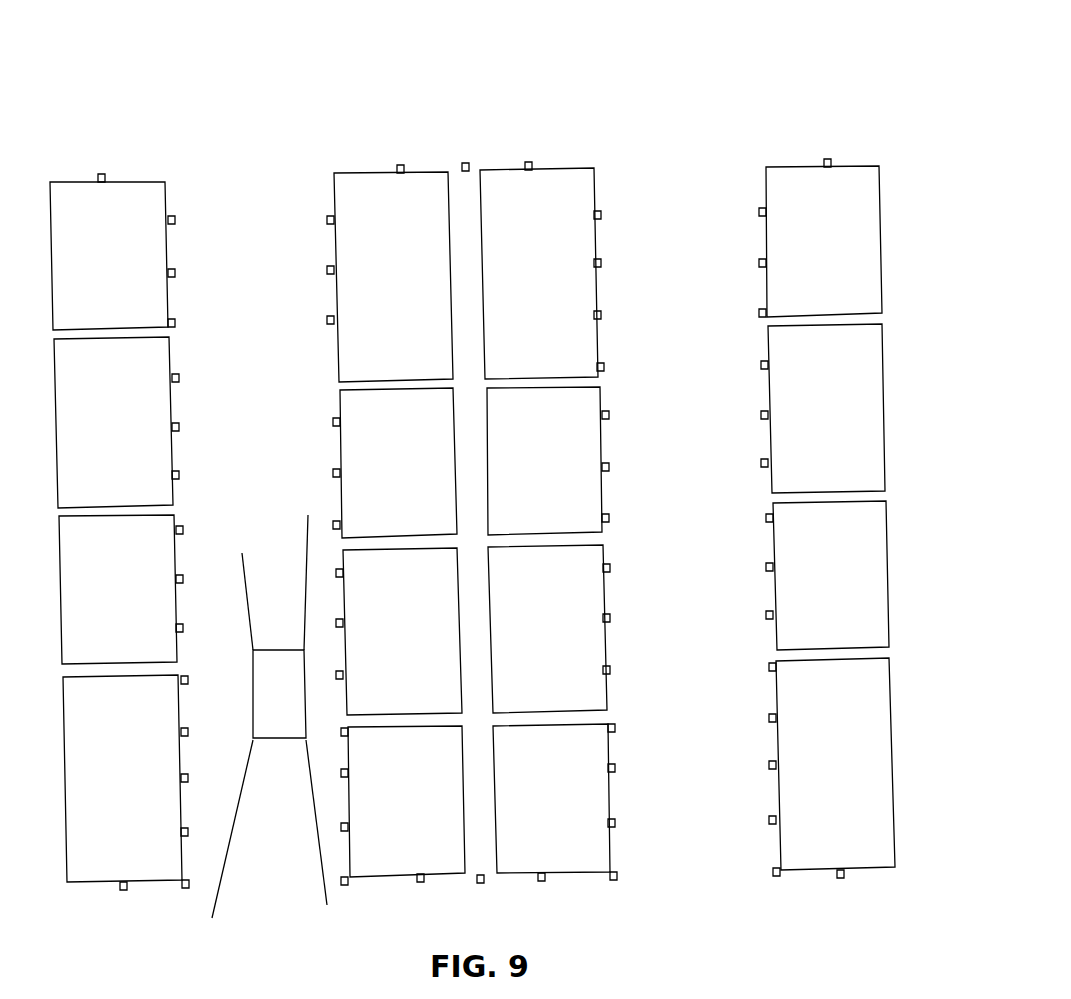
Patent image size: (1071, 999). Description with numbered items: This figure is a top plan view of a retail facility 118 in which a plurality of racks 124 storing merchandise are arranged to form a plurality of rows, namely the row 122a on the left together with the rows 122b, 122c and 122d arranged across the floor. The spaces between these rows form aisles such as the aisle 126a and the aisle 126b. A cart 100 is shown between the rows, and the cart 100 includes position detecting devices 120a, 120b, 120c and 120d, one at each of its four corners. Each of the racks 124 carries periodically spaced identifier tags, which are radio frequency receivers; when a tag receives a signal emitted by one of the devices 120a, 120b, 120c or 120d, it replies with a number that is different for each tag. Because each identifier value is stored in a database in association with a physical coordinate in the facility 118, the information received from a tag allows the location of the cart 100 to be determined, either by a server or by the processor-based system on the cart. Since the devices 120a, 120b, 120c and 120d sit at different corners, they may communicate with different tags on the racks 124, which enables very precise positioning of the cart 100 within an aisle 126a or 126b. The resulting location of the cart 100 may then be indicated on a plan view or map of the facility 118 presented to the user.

The retail facility 118 is at (764, 100).
The cart 100 is at (306, 683).
The position detecting device 120a is at (212, 918).
The position detecting device 120b is at (242, 553).
The position detecting device 120c is at (308, 515).
The position detecting device 120d is at (327, 905).
The row 122a is at (145, 395).
The row 122b is at (348, 263).
The row 122c is at (568, 265).
The row 122d is at (773, 190).
The rack 124 is at (140, 203).
The aisle 126a is at (248, 183).
The aisle 126b is at (645, 177).